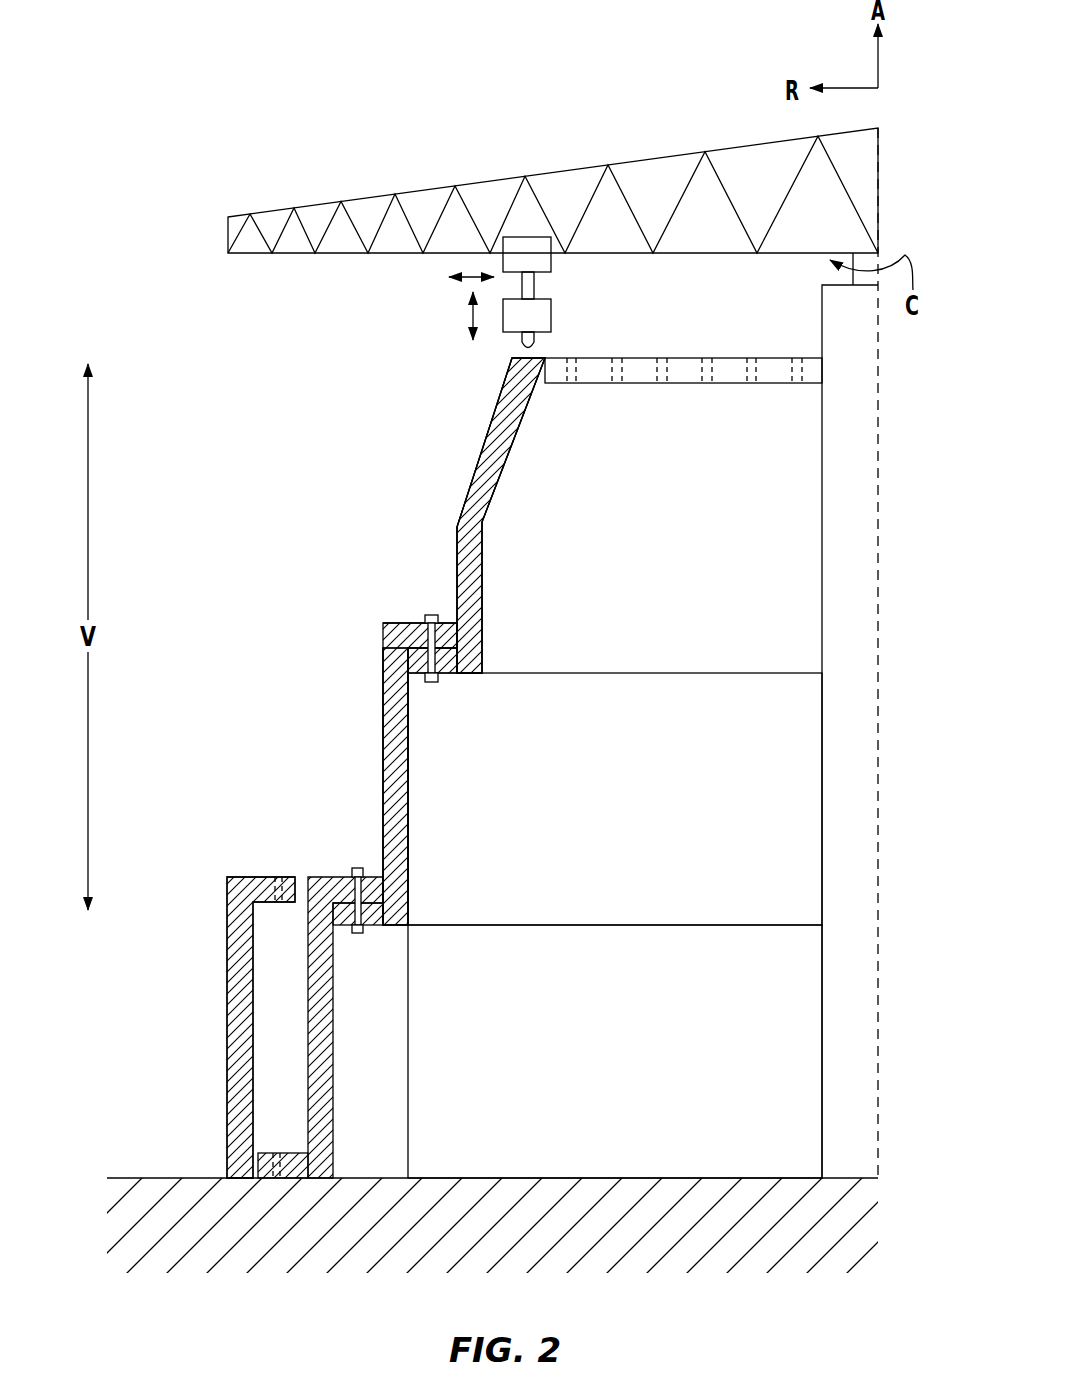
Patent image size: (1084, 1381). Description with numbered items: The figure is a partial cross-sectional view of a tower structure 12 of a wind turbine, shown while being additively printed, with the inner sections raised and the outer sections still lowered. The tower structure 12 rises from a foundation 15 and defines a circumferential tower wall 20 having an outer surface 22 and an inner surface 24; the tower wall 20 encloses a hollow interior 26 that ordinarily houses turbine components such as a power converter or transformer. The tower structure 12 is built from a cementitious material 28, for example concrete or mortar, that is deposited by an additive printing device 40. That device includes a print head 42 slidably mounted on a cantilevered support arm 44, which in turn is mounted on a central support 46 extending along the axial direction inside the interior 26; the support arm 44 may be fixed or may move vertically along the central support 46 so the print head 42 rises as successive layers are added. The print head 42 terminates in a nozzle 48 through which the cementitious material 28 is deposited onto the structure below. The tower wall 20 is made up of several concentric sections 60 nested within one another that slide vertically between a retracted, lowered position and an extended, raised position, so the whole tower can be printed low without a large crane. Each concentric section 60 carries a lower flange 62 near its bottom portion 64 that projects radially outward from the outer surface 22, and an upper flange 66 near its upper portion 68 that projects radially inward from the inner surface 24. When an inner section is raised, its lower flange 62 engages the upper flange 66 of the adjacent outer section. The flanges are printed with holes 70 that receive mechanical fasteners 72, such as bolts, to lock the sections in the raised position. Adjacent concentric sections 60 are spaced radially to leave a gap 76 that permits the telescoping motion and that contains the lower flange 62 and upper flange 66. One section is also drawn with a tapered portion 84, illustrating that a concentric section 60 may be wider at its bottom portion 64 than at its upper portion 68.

The tower structure 12 is at (148, 322).
The foundation 15 is at (612, 1237).
The circumferential tower wall 20 is at (380, 723).
The outer surface 22 is at (380, 783).
The inner surface 24 is at (418, 800).
The hollow interior 26 is at (697, 802).
The cementitious material 28 is at (489, 487).
The additive printing device 40 is at (560, 268).
The print head 42 is at (560, 318).
The cantilevered support arm 44 is at (703, 150).
The central support 46 is at (855, 612).
The nozzle 48 is at (515, 343).
The concentric section 60 is at (458, 533).
The lower flange 62 is at (455, 670).
The bottom portion 64 is at (402, 930).
The upper flange 66 is at (326, 876).
The upper portion 68 is at (395, 620).
The holes 70 is at (616, 390).
The mechanical fasteners 72 is at (433, 683).
The gap 76 is at (283, 1042).
The tapered portion 84 is at (478, 455).